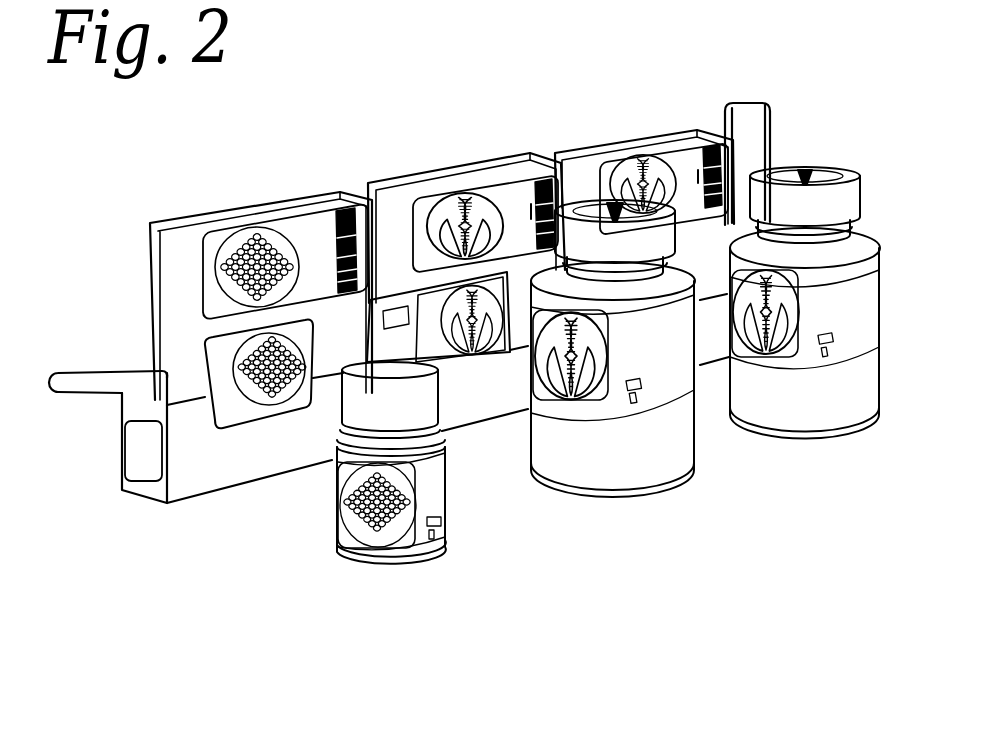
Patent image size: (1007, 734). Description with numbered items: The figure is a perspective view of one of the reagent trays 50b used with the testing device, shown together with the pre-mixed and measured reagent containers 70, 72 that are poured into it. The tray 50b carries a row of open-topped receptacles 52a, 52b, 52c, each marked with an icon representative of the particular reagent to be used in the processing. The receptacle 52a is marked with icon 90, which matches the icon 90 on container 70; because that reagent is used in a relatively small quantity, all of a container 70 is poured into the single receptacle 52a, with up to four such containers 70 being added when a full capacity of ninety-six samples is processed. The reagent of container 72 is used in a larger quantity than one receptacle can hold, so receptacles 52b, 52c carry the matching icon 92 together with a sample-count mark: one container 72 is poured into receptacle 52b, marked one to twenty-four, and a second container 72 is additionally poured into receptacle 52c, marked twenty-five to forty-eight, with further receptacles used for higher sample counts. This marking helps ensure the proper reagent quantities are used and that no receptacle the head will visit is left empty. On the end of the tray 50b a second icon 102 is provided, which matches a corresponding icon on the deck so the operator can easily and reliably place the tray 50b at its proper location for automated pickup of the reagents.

The tray 50b is at (212, 481).
The receptacle 52a is at (260, 213).
The receptacle 52b is at (495, 172).
The receptacle 52c is at (683, 130).
The container 70 is at (365, 530).
The container 72 is at (618, 479).
The icon 90 is at (230, 250).
The icon 92 is at (445, 213).
The icon 102 is at (150, 474).